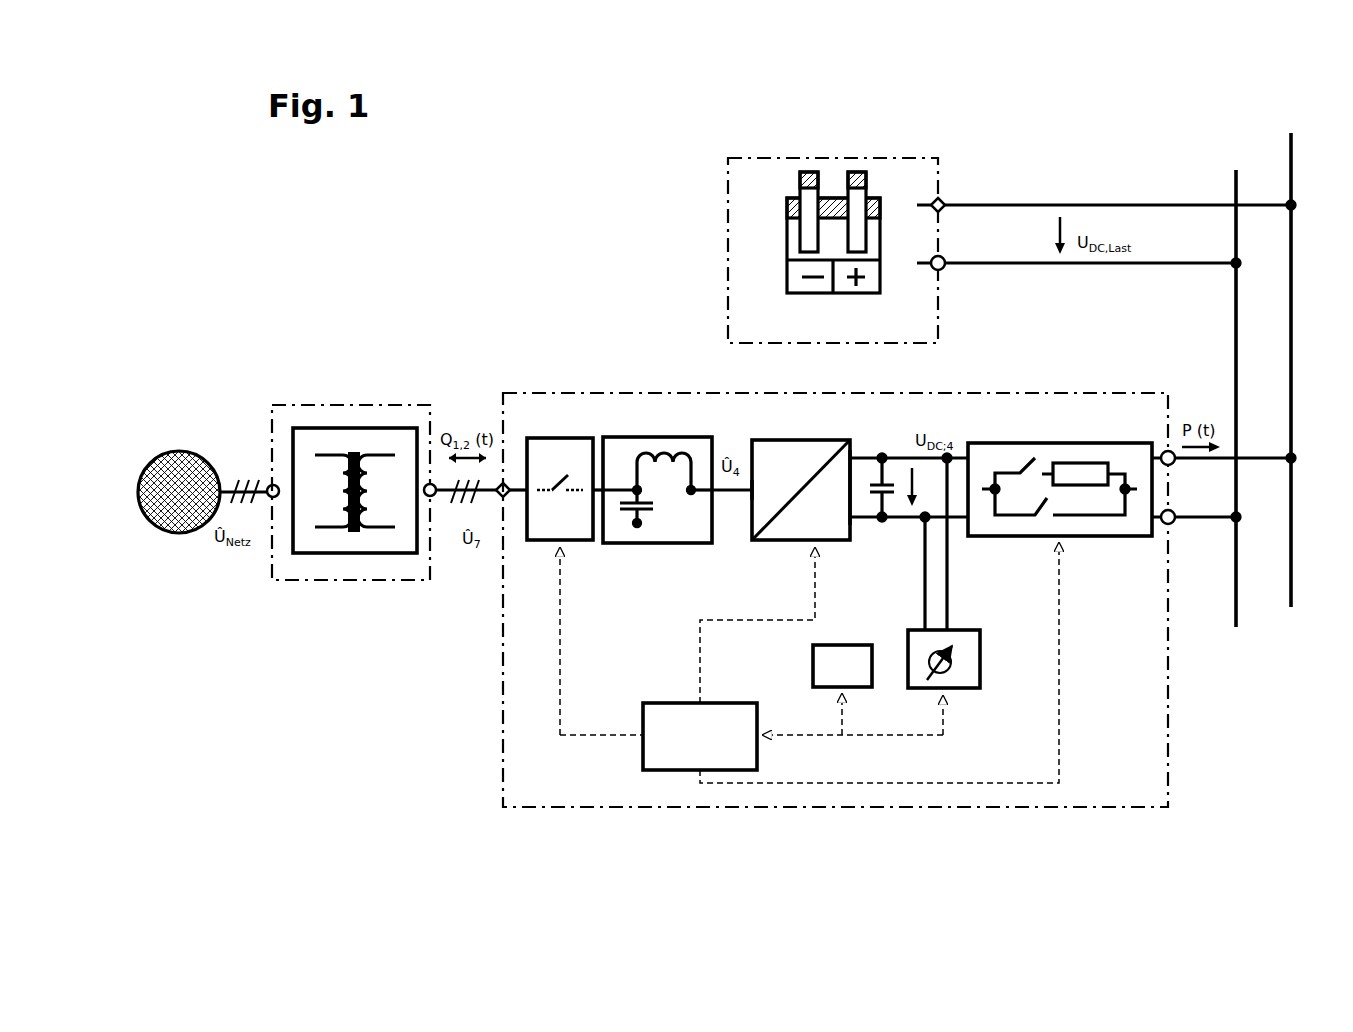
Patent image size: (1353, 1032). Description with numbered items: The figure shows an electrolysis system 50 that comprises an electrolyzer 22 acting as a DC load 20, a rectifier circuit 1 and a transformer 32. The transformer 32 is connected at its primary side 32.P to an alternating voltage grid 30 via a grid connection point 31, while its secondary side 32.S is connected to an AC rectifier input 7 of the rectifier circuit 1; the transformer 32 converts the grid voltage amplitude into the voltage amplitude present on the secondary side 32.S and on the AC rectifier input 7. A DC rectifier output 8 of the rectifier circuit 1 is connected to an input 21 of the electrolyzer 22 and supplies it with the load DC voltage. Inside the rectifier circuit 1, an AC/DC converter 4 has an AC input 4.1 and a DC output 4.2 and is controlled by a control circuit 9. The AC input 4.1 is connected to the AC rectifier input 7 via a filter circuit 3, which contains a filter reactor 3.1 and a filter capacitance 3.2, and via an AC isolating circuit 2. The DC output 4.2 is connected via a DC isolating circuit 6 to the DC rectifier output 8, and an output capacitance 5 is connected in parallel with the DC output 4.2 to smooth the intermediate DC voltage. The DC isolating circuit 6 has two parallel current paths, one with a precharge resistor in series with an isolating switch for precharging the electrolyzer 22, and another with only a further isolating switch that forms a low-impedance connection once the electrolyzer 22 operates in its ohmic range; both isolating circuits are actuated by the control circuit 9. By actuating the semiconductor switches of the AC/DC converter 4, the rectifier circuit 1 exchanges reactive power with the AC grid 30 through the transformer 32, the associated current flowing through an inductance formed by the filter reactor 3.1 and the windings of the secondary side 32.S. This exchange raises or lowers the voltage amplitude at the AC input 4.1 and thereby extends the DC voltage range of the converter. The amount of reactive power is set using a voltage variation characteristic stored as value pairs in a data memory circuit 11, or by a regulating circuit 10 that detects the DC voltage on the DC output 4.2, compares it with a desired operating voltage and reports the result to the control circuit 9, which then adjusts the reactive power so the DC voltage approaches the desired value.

The rectifier circuit 1 is at (837, 805).
The AC isolating circuit 2 is at (560, 437).
The filter circuit 3 is at (652, 476).
The filter reactor 3.1 is at (680, 470).
The filter capacitance 3.2 is at (625, 510).
The AC/DC converter 4 is at (806, 476).
The AC input 4.1 is at (752, 497).
The DC output 4.2 is at (851, 518).
The output capacitance 5 is at (899, 476).
The DC isolating circuit 6 is at (1062, 442).
The AC rectifier input 7 is at (510, 500).
The DC rectifier output 8 is at (1176, 514).
The control circuit 9 is at (700, 736).
The regulating circuit 10 is at (980, 658).
The data memory circuit 11 is at (842, 666).
The DC load 20 is at (838, 250).
The input of the electrolyzer 21 is at (942, 258).
The electrolyzer 22 is at (787, 252).
The AC grid 30 is at (180, 452).
The grid connection point 31 is at (270, 487).
The transformer 32 is at (339, 488).
The primary side 32.P is at (323, 527).
The secondary side 32.S is at (387, 527).
The electrolysis system 50 is at (505, 280).